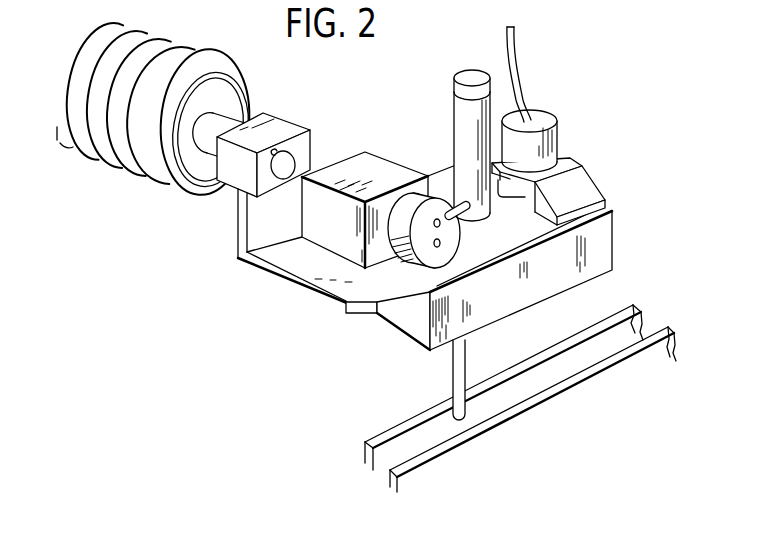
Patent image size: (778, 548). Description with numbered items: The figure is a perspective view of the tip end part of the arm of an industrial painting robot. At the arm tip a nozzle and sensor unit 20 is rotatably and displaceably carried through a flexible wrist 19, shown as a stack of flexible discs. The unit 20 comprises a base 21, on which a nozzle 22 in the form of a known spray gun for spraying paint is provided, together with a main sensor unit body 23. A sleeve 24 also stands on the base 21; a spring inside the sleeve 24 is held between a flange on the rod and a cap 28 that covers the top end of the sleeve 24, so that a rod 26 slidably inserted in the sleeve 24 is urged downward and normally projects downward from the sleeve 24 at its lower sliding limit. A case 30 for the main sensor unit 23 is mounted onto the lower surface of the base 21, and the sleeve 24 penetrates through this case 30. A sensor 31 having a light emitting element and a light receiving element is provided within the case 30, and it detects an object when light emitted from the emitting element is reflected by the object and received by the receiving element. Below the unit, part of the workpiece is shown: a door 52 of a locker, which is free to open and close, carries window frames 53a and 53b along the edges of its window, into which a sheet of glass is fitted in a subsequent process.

The flexible wrist 19 is at (202, 50).
The nozzle and sensor unit 20 is at (396, 130).
The base 21 is at (270, 277).
The nozzle (spray gun) 22 is at (417, 253).
The main sensor unit body 23 is at (591, 180).
The sleeve 24 is at (454, 130).
The rod 26 is at (453, 370).
The cap 28 is at (465, 70).
The case 30 is at (610, 238).
The sensor 31 is at (558, 138).
The door 52 is at (511, 379).
The window frame 53a is at (390, 433).
The window frame 53b is at (533, 403).